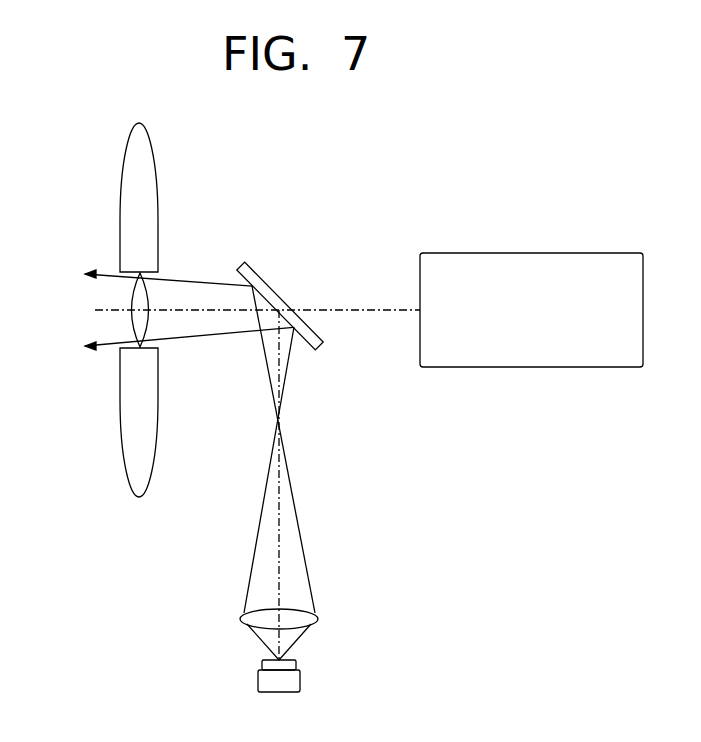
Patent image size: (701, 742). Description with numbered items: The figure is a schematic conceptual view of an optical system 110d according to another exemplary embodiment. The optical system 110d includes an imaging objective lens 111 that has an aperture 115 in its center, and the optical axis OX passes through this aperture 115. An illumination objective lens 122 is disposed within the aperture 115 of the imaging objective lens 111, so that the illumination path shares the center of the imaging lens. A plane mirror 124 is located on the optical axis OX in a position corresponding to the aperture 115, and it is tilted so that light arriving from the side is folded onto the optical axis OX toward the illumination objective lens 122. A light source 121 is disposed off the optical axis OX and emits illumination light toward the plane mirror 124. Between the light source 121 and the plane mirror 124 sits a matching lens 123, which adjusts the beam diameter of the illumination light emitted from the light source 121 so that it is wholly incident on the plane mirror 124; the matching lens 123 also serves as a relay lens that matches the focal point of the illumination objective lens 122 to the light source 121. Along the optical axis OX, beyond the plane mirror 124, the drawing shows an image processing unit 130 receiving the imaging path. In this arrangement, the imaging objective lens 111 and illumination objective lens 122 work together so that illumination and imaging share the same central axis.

The imaging objective lens 111 is at (126, 190).
The aperture 115 is at (126, 287).
The illumination objective lens 122 is at (130, 325).
The plane mirror 124 is at (271, 278).
The optical axis OX is at (368, 302).
The image processing unit 130 is at (503, 252).
The matching lens 123 is at (319, 619).
The light source 121 is at (300, 682).
The optical system 110d is at (112, 536).